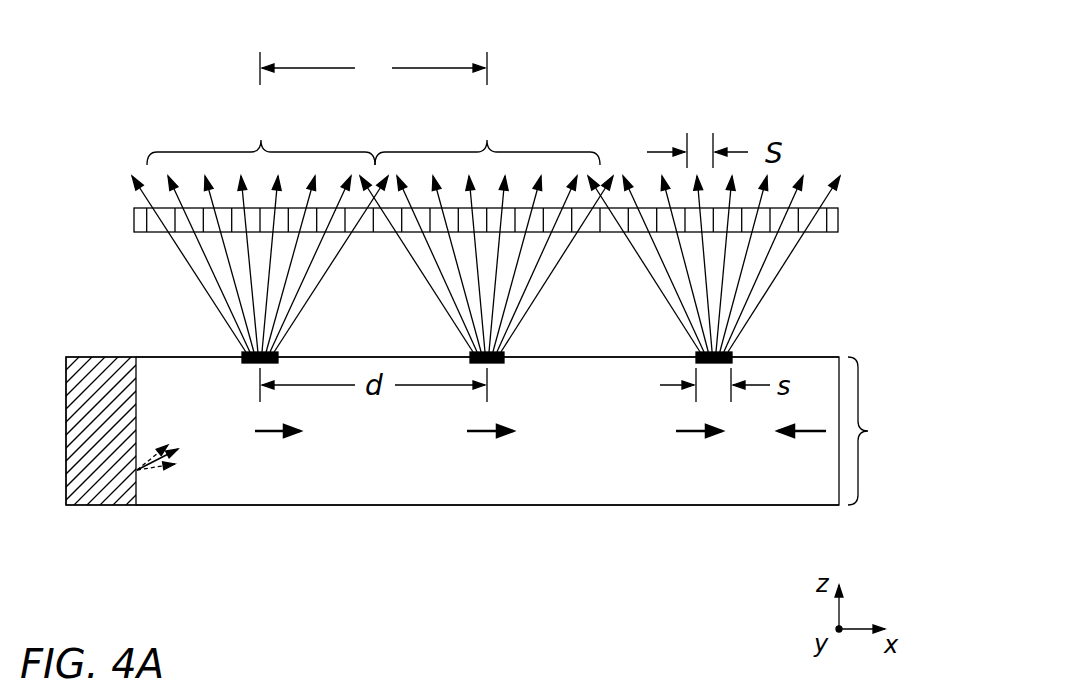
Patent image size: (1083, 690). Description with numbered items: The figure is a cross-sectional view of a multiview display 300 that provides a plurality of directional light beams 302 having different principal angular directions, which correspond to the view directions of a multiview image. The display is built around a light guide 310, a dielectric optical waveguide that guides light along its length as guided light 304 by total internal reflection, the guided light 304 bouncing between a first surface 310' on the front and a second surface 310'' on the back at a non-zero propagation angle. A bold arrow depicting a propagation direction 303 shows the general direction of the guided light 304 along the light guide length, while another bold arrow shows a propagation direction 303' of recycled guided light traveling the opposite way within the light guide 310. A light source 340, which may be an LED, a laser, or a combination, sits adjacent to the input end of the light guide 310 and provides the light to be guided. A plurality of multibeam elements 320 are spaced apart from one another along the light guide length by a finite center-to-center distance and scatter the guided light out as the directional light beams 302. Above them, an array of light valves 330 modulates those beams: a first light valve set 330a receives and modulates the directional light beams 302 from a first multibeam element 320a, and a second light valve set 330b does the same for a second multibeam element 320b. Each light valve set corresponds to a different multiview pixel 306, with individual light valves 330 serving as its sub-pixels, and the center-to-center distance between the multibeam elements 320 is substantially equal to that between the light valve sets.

The multiview display 300 is at (815, 62).
The directional light beams 302 is at (842, 256).
The propagation direction 303 is at (488, 488).
The propagation direction of recycled guided light 303' is at (753, 486).
The guided light 304 is at (168, 480).
The multiview pixel 306 is at (203, 120).
The light guide 310 is at (502, 431).
The first surface 310' is at (532, 338).
The second surface 310'' is at (536, 526).
The multibeam elements 320 is at (222, 332).
The first multibeam element 320a is at (300, 333).
The second multibeam element 320b is at (523, 332).
The light valves 330 is at (123, 215).
The first light valve set 330a is at (261, 137).
The second light valve set 330b is at (487, 137).
The light source 340 is at (100, 517).